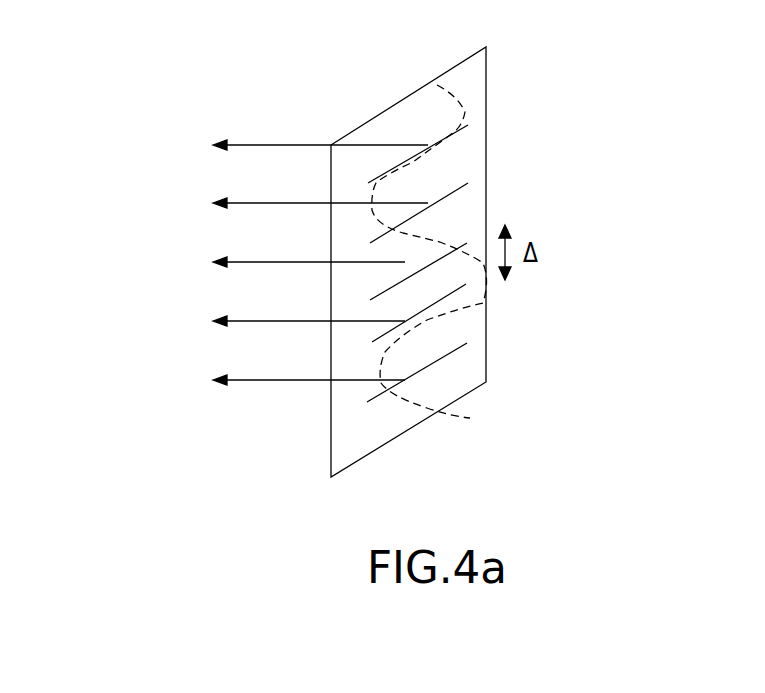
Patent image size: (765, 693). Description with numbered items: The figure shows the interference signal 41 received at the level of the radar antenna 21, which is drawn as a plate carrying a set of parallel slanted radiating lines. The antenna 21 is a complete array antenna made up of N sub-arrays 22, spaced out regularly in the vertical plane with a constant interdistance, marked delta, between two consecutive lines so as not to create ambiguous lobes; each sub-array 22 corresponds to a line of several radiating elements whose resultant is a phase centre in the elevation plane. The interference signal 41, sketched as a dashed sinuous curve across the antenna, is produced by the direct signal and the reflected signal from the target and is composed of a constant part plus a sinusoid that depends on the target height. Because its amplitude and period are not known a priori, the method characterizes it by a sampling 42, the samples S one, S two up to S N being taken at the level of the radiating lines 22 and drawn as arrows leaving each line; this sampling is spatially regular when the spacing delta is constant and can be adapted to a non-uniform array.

The antenna 21 is at (486, 356).
The sub-arrays 22 is at (468, 183).
The interference signal 41 is at (465, 112).
The sampling 42 is at (148, 407).